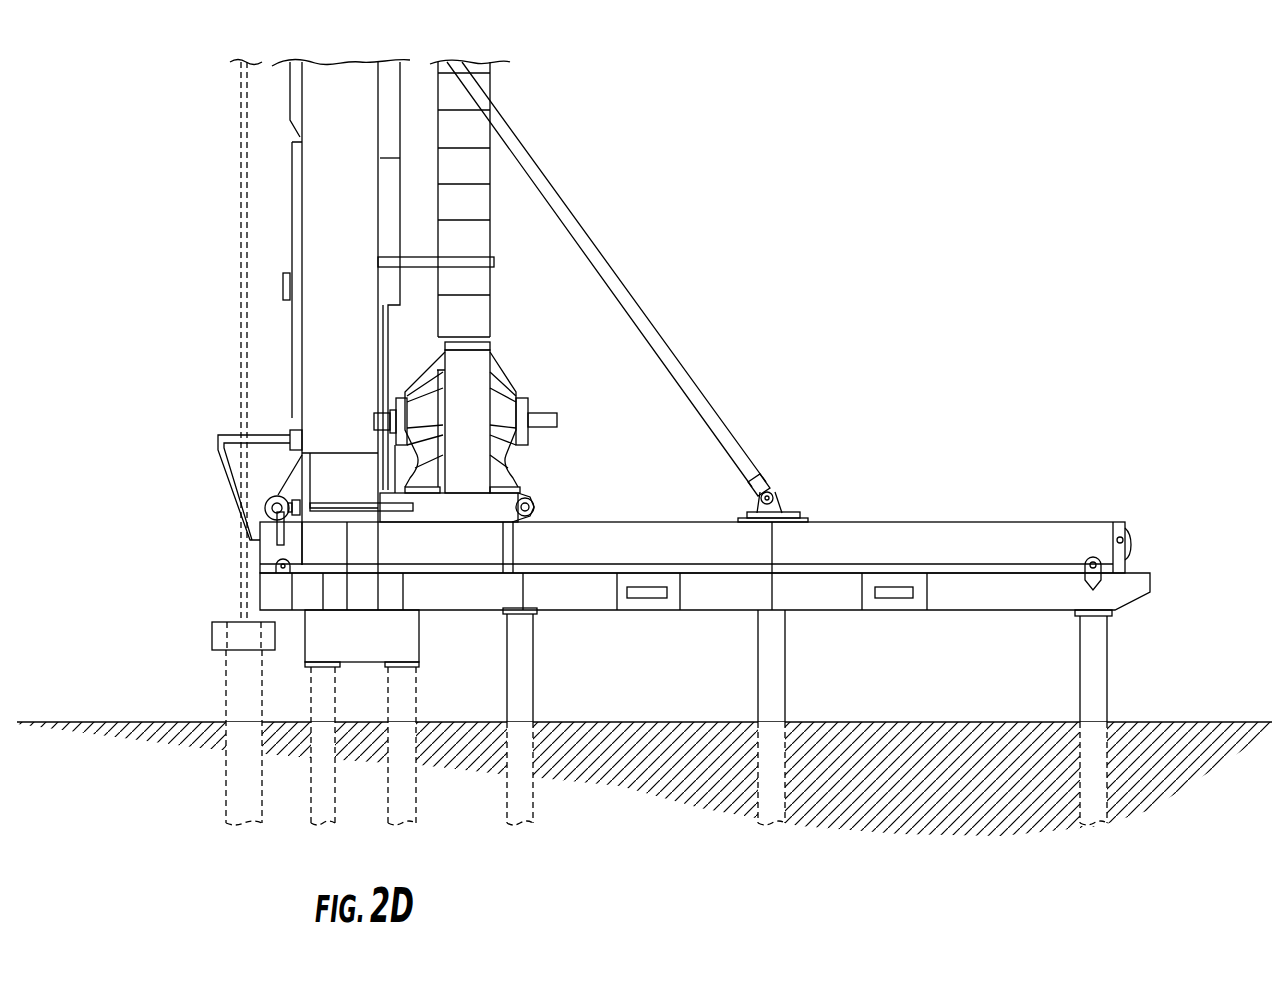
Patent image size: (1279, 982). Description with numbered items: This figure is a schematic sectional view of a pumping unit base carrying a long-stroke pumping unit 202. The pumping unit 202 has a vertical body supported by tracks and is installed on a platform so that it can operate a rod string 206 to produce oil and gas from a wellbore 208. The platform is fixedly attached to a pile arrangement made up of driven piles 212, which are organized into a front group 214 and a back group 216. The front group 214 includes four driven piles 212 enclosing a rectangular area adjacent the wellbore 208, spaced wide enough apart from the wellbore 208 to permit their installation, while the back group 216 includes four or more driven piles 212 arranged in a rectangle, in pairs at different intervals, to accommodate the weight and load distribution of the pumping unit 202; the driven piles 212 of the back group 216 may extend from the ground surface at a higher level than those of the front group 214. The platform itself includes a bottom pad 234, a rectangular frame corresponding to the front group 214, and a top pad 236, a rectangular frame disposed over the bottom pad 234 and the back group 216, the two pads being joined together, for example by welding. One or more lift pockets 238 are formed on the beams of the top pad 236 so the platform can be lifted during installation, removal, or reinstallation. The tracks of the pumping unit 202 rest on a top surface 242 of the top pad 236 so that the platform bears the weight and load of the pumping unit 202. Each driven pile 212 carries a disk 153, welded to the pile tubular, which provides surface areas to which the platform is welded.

The pumping unit 202 is at (420, 75).
The rod string 206 is at (241, 163).
The wellbore 208 is at (212, 636).
The driven pile 212 is at (1095, 695).
The front group 214 is at (320, 838).
The back group 216 is at (1104, 848).
The bottom pad 234 is at (398, 627).
The top pad 236 is at (1013, 593).
The lift pocket 238 is at (890, 590).
The top surface 242 is at (988, 573).
The disk 153 is at (1095, 612).